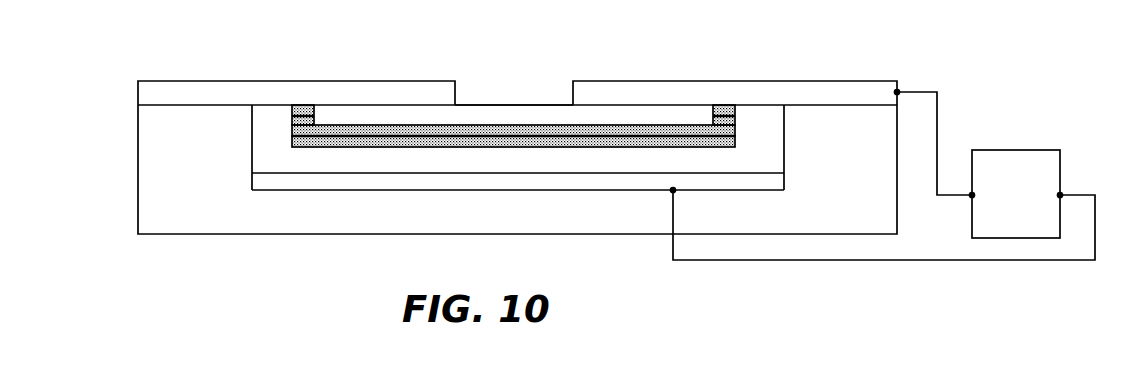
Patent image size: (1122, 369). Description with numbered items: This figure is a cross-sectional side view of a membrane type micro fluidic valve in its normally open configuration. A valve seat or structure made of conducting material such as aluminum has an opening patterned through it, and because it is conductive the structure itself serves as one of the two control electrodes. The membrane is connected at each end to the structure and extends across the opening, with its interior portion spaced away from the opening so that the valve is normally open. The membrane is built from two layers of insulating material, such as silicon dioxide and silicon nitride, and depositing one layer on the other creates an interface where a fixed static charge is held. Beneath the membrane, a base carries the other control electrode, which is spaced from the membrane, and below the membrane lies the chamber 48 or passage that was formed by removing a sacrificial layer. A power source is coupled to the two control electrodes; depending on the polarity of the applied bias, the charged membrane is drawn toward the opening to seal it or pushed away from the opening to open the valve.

The chamber 48 is at (252, 140).